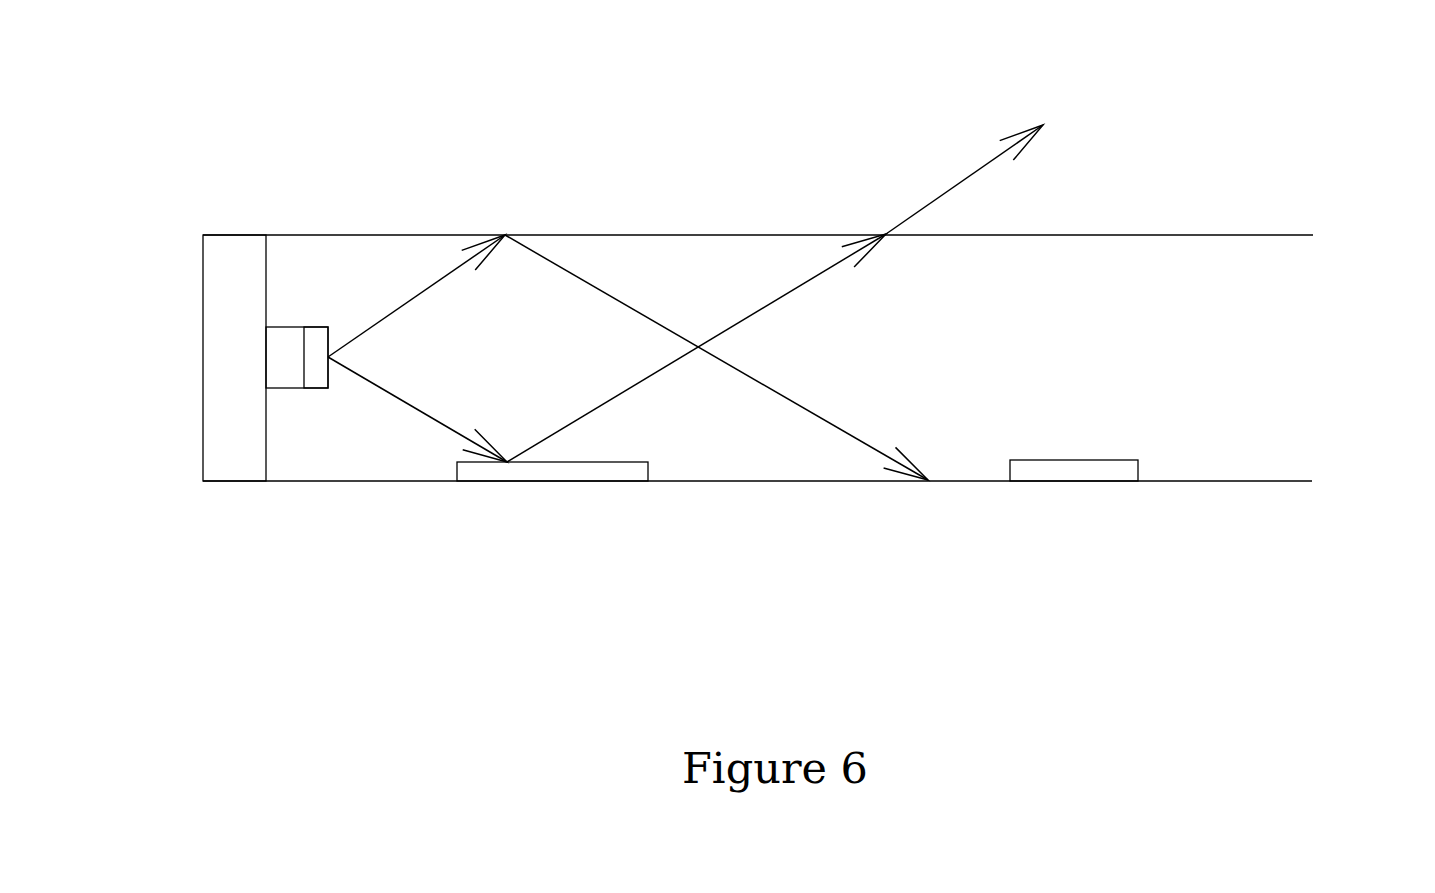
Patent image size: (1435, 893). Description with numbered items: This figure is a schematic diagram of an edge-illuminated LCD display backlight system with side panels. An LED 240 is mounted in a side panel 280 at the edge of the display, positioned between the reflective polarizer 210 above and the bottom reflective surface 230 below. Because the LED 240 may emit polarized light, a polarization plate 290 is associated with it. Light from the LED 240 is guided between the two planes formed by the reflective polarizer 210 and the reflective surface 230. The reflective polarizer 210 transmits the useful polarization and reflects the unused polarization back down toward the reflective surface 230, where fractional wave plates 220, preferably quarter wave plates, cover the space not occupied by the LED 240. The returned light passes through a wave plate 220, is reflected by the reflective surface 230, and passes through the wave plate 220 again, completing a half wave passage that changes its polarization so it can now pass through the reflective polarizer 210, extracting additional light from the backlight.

The reflective polarizer 210 is at (1277, 100).
The fractional wave plate 220 is at (600, 476).
The reflective surface 230 is at (1212, 481).
The LED 240 is at (278, 335).
The side panel 280 is at (225, 275).
The polarization plate 290 is at (317, 335).